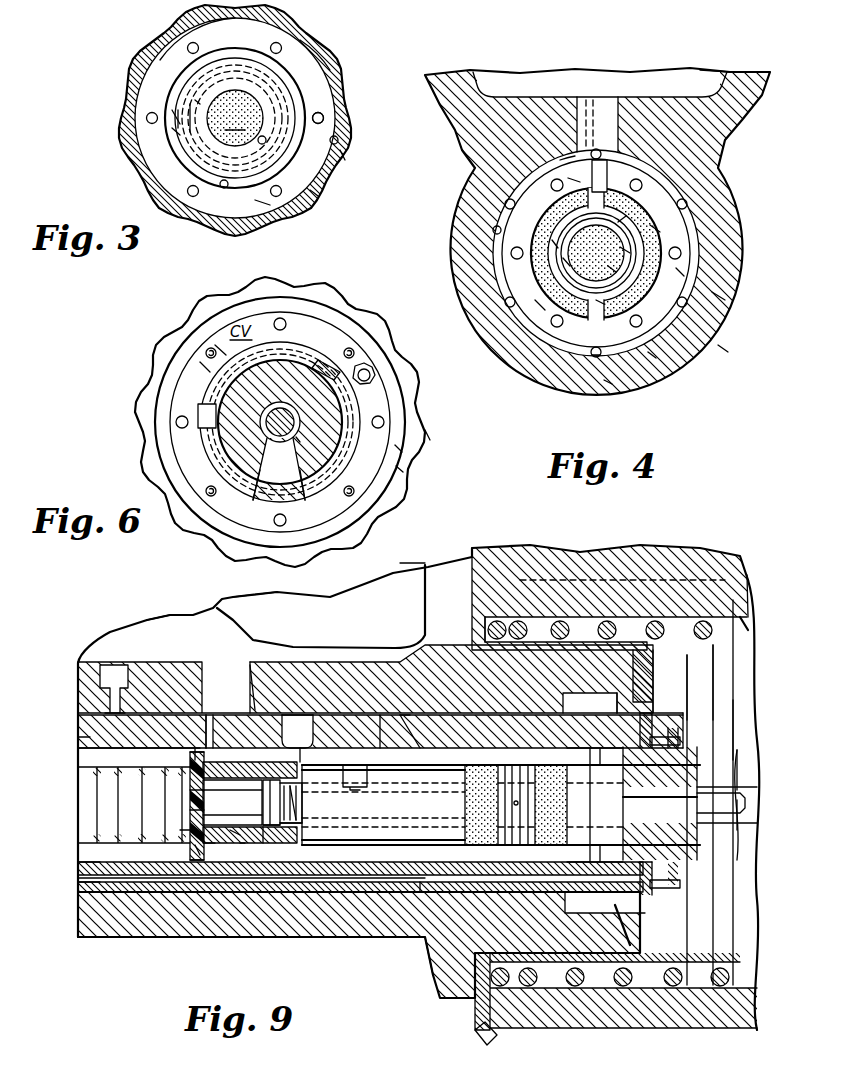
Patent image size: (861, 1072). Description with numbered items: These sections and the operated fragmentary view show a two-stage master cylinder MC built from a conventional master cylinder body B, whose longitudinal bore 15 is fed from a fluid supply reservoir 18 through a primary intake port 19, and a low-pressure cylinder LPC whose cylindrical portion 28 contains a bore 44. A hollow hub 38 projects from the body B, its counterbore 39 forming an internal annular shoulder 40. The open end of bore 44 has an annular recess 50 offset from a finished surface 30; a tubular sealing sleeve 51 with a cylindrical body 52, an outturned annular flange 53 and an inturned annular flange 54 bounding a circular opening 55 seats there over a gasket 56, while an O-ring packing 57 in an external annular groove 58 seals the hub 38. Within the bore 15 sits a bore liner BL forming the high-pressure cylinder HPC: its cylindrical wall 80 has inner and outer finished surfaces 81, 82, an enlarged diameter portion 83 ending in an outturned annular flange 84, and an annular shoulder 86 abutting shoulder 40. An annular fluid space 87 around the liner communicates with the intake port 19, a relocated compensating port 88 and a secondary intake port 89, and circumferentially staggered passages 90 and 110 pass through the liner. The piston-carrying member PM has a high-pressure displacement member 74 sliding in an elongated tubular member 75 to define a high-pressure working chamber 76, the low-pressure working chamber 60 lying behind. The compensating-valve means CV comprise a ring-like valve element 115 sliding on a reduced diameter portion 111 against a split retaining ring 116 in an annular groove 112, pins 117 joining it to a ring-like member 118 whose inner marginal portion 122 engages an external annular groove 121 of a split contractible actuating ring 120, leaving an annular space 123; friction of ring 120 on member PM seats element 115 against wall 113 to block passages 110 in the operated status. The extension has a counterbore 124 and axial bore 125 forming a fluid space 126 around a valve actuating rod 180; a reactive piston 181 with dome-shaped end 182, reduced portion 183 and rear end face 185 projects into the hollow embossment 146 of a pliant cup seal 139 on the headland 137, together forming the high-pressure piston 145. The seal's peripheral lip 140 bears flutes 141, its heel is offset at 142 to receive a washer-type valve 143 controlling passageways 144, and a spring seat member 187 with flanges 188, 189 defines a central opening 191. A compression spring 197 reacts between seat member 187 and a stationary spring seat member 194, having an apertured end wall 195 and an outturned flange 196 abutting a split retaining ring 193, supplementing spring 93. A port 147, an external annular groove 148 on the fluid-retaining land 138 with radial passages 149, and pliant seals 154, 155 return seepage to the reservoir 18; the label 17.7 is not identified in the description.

In FIG. 3, the longitudinal bore 15 is at (338, 140).
In FIG. 4, the longitudinal bore 15 is at (493, 229).
In FIG. 4, the fluid supply reservoir 18 is at (712, 70).
In FIG. 9, the fluid supply reservoir 18 is at (130, 632).
In FIG. 4, the primary intake port 19 is at (607, 100).
In FIG. 9, the primary intake port 19 is at (270, 605).
In FIG. 9, the intermediate cylindrical portion 28 is at (735, 1010).
In FIG. 9, the finished surface 30 is at (470, 562).
In FIG. 9, the hollow hub 38 is at (600, 990).
In FIG. 9, the counterbore 39 is at (615, 700).
In FIG. 9, the internal annular shoulder 40 is at (582, 642).
In FIG. 9, the cylindrical bore 44 is at (740, 990).
In FIG. 9, the annular recess 50 is at (490, 620).
In FIG. 9, the tubular sealing sleeve 51 is at (592, 964).
In FIG. 9, the cylindrical body 52 is at (640, 1000).
In FIG. 9, the outturned annular flange 53 is at (476, 1012).
In FIG. 9, the inturned annular flange 54 is at (673, 995).
In FIG. 6, the circular opening 55 is at (400, 452).
In FIG. 9, the circular opening 55 is at (715, 930).
In FIG. 9, the annular seal or gasket 56 is at (480, 1035).
In FIG. 9, the O-ring packing 57 is at (560, 962).
In FIG. 9, the external annular groove 58 is at (612, 920).
In FIG. 9, the low-pressure working chamber 60 is at (725, 660).
In FIG. 4, the high-pressure displacement member 74 is at (680, 272).
In FIG. 6, the high-pressure displacement member 74 is at (289, 391).
In FIG. 9, the high-pressure displacement member 74 is at (392, 811).
In FIG. 9, the elongated tubular member 75 is at (480, 743).
In FIG. 9, the high-pressure working chamber 76 is at (80, 752).
In FIG. 3, the cylindrical wall 80 is at (264, 206).
In FIG. 4, the cylindrical wall 80 is at (607, 384).
In FIG. 9, the cylindrical wall 80 is at (176, 740).
In FIG. 3, the inner finished surface 81 is at (222, 188).
In FIG. 9, the inner finished surface 81 is at (85, 884).
In FIG. 3, the outer finished surface 82 is at (320, 196).
In FIG. 4, the outer finished surface 82 is at (566, 162).
In FIG. 9, the outer finished surface 82 is at (98, 680).
In FIG. 9, the enlarged diameter portion 83 is at (580, 913).
In FIG. 9, the outturned annular flange 84 is at (645, 670).
In FIG. 9, the annular shoulder 86 is at (565, 710).
In FIG. 4, the annular fluid space 87 is at (651, 357).
In FIG. 9, the annular fluid space 87 is at (378, 715).
In FIG. 4, the compensating port 88 is at (570, 180).
In FIG. 9, the compensating port 88 is at (290, 725).
In FIG. 9, the secondary intake port 89 is at (302, 748).
In FIG. 3, the fluid communication passages 90 is at (322, 114).
In FIG. 4, the fluid communication passages 90 is at (560, 328).
In FIG. 9, the fluid communication passages 90 is at (420, 894).
In FIG. 9, the spring 93 is at (745, 618).
In FIG. 4, the fluid communicating passages 110 is at (596, 358).
In FIG. 6, the fluid communicating passages 110 is at (371, 371).
In FIG. 9, the fluid communicating passages 110 is at (646, 712).
In FIG. 9, the reduced diameter terminating portion 111 is at (625, 765).
In FIG. 9, the annular groove 112 is at (644, 742).
In FIG. 9, the wall 113 is at (690, 700).
In FIG. 9, the valve-forming element 115 is at (700, 900).
In FIG. 9, the split retaining ring 116 is at (640, 770).
In FIG. 6, the pins 117 is at (178, 424).
In FIG. 9, the pins 117 is at (678, 740).
In FIG. 6, the ring-like member 118 is at (400, 470).
In FIG. 9, the ring-like member 118 is at (680, 880).
In FIG. 6, the split contractible actuating ring 120 is at (220, 350).
In FIG. 9, the split contractible actuating ring 120 is at (700, 845).
In FIG. 6, the external annular groove 121 is at (205, 368).
In FIG. 9, the external annular groove 121 is at (680, 740).
In FIG. 6, the inner marginal portion 122 is at (338, 372).
In FIG. 9, the inner marginal portion 122 is at (655, 870).
In FIG. 6, the annular space 123 is at (322, 360).
In FIG. 9, the annular space 123 is at (738, 758).
In FIG. 9, the counterbore 124 is at (265, 846).
In FIG. 6, the axial bore 125 is at (298, 440).
In FIG. 9, the axial bore 125 is at (292, 826).
In FIG. 6, the fluid space 126 is at (254, 500).
In FIG. 9, the fluid space 126 is at (740, 822).
In FIG. 9, the headland 137 is at (208, 845).
In FIG. 9, the fluid-retaining land 138 is at (415, 712).
In FIG. 4, the pliant cup seal 139 is at (658, 227).
In FIG. 9, the pliant cup seal 139 is at (195, 862).
In FIG. 4, the peripheral lip 140 is at (555, 243).
In FIG. 9, the peripheral lip 140 is at (188, 756).
In FIG. 9, the longitudinal flutes 141 is at (197, 848).
In FIG. 9, the offset heel portion 142 is at (196, 750).
In FIG. 9, the washer-type valve 143 is at (208, 714).
In FIG. 9, the fluid passageways 144 is at (250, 660).
In FIG. 9, the high-pressure piston 145 is at (268, 828).
In FIG. 3, the hollow-dome-shaped embossment 146 is at (218, 130).
In FIG. 4, the hollow-dome-shaped embossment 146 is at (612, 270).
In FIG. 9, the hollow-dome-shaped embossment 146 is at (212, 803).
In FIG. 9, the port 147 is at (355, 780).
In FIG. 9, the external annular groove 148 is at (515, 762).
In FIG. 9, the radial passages 149 is at (512, 803).
In FIG. 9, the annular pliant seal 154 is at (466, 853).
In FIG. 9, the annular pliant seal 155 is at (542, 748).
In FIG. 6, the valve actuating rod 180 is at (304, 500).
In FIG. 9, the valve actuating rod 180 is at (746, 803).
In FIG. 9, the reactive valve-actuating piston 181 is at (256, 710).
In FIG. 9, the dome-shaped end 182 is at (190, 790).
In FIG. 9, the reduced portion 183 is at (243, 846).
In FIG. 9, the rear end face 185 is at (300, 826).
In FIG. 4, the annular spring seat member 187 is at (566, 262).
In FIG. 9, the annular spring seat member 187 is at (235, 836).
In FIG. 4, the flange 188 is at (600, 305).
In FIG. 9, the flange 188 is at (90, 862).
In FIG. 4, the flange 189 is at (600, 172).
In FIG. 9, the flange 189 is at (185, 812).
In FIG. 3, the central opening 191 is at (235, 140).
In FIG. 4, the central opening 191 is at (628, 250).
In FIG. 9, the central opening 191 is at (182, 832).
In FIG. 3, the split retaining ring 193 is at (172, 133).
In FIG. 3, the stationary spring seat member 194 is at (198, 102).
In FIG. 3, the centrally apertured end wall 195 is at (265, 143).
In FIG. 3, the outturned annular flange 196 is at (176, 120).
In FIG. 3, the compression spring 197 is at (290, 92).
In FIG. 4, the compression spring 197 is at (621, 224).
In FIG. 9, the compression spring 197 is at (93, 770).
In FIG. 9, the spline 17.7 is at (300, 803).
In FIG. 3, the master cylinder body B is at (352, 164).
In FIG. 4, the master cylinder body B is at (724, 350).
In FIG. 6, the master cylinder body B is at (432, 442).
In FIG. 9, the master cylinder body B is at (72, 641).
In FIG. 3, the bore liner BL is at (170, 58).
In FIG. 4, the bore liner BL is at (538, 308).
In FIG. 9, the bore liner BL is at (416, 735).
In FIG. 3, the high-pressure cylinder HPC is at (314, 48).
In FIG. 4, the high-pressure cylinder HPC is at (722, 298).
In FIG. 9, the high-pressure cylinder HPC is at (70, 912).
In FIG. 4, the master cylinder MC is at (763, 54).
In FIG. 9, the master cylinder MC is at (410, 977).
In FIG. 6, the piston-carrying member PM is at (226, 408).
In FIG. 9, the piston-carrying member PM is at (736, 748).
In FIG. 9, the compensating-valve means CV is at (622, 804).
In FIG. 9, the low-pressure cylinder LPC is at (775, 560).